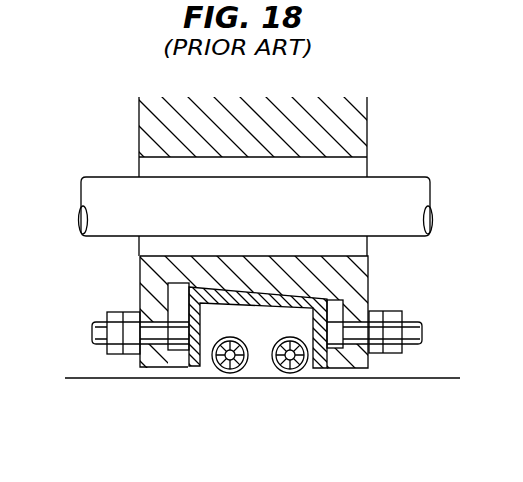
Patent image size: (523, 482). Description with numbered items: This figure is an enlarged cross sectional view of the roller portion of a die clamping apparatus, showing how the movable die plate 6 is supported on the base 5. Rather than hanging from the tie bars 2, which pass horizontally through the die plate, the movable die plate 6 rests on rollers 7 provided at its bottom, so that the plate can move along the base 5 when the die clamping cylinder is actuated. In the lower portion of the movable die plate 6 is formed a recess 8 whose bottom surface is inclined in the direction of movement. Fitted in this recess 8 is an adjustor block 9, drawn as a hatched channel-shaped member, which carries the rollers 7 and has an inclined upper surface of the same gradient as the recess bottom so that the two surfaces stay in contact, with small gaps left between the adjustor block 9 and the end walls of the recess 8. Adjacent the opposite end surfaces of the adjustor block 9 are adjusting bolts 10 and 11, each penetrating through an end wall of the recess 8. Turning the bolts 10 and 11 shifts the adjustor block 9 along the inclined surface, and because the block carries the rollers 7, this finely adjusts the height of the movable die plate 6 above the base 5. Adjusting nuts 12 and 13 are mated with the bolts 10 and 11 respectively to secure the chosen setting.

The tie bars 2 is at (385, 191).
The base 5 is at (423, 378).
The movable die plate 6 is at (355, 273).
The rollers 7 is at (232, 378).
The recess 8 is at (340, 352).
The adjustor block 9 is at (198, 295).
The adjusting bolt 10 is at (408, 333).
The adjusting bolt 11 is at (94, 333).
The adjusting nut 12 is at (393, 314).
The adjusting nut 13 is at (113, 355).